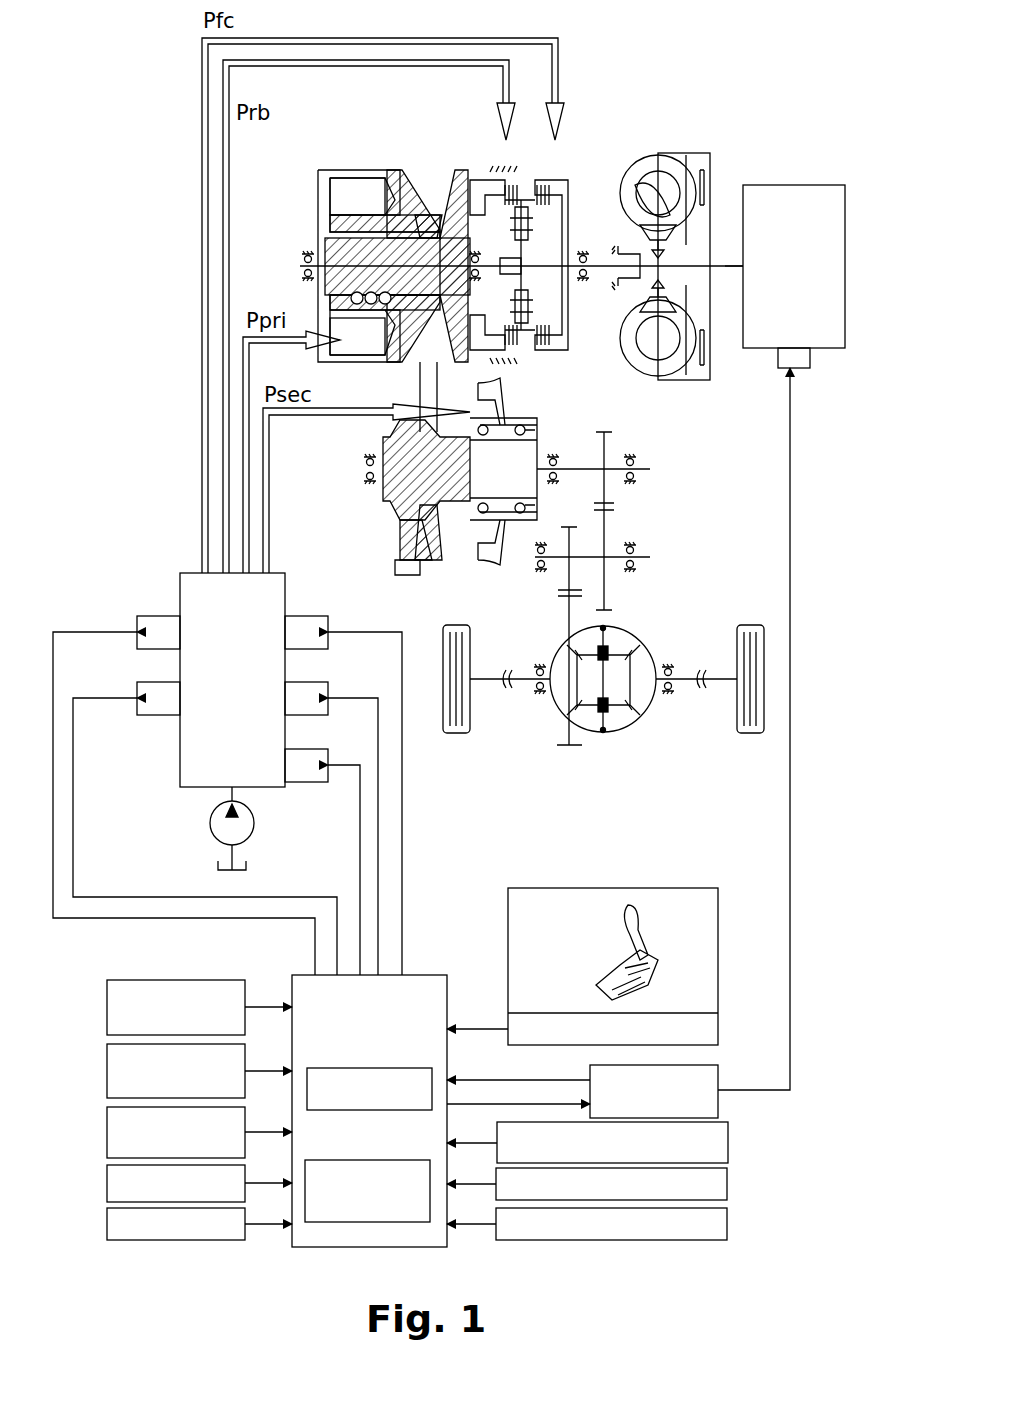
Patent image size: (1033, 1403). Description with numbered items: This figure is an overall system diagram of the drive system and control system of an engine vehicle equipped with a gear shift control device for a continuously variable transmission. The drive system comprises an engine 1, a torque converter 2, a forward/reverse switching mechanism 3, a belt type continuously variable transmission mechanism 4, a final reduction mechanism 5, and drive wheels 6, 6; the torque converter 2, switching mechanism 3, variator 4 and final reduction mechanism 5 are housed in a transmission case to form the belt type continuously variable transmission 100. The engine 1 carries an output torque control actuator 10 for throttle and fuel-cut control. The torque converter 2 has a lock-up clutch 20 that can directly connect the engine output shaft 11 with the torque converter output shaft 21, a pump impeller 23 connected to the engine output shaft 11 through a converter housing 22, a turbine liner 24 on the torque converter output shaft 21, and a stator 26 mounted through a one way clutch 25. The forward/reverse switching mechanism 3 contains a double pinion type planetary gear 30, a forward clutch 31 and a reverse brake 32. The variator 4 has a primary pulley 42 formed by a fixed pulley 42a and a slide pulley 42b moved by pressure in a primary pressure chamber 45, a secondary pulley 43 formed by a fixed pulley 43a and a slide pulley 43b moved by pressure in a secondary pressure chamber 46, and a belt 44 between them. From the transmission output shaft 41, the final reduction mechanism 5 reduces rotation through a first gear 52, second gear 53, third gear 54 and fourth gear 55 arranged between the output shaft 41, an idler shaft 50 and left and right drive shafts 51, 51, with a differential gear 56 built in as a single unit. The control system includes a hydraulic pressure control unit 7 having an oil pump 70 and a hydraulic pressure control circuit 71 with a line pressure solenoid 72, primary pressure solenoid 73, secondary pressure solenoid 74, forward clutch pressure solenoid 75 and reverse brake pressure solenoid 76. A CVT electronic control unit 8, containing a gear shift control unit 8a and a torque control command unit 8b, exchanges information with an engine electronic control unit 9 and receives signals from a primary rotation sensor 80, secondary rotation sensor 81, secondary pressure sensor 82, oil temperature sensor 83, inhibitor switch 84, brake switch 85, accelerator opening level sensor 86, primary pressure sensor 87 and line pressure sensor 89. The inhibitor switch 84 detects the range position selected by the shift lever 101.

The engine 1 is at (796, 185).
The torque converter 2 is at (653, 252).
The forward/reverse switching mechanism 3 is at (519, 253).
The belt type continuously variable transmission mechanism 4 is at (418, 233).
The final reduction mechanism 5 is at (662, 548).
The drive wheels 6 is at (456, 733).
The hydraulic pressure control unit 7 is at (180, 556).
The CVT electronic control unit 8 is at (371, 1087).
The gear shift control unit 8a is at (390, 1068).
The torque control command unit 8b is at (390, 1160).
The engine electronic control unit 9 is at (718, 1078).
The output torque control actuator 10 is at (810, 366).
The engine output shaft 11 is at (722, 268).
The lock-up clutch 20 is at (710, 215).
The torque converter output shaft 21 is at (610, 275).
The converter housing 22 is at (698, 153).
The pump impeller 23 is at (640, 170).
The turbine liner 24 is at (672, 375).
The one way clutch 25 is at (633, 237).
The stator 26 is at (637, 180).
The double pinion type planetary gear 30 is at (522, 348).
The forward clutch 31 is at (553, 180).
The reverse brake 32 is at (492, 180).
The transmission output shaft 41 is at (576, 462).
The primary pulley 42 is at (318, 192).
The fixed pulley 42a is at (455, 195).
The slide pulley 42b is at (412, 215).
The secondary pulley 43 is at (426, 497).
The fixed pulley 43a is at (400, 545).
The slide pulley 43b is at (440, 568).
The belt 44 is at (420, 390).
The primary pressure chamber 45 is at (345, 180).
The secondary pressure chamber 46 is at (480, 560).
The idler shaft 50 is at (614, 572).
The drive shafts 51 is at (500, 684).
The first gear 52 is at (612, 440).
The second gear 53 is at (610, 528).
The third gear 54 is at (562, 540).
The fourth gear 55 is at (568, 626).
The differential gear 56 is at (648, 645).
The oil pump 70 is at (210, 823).
The hydraulic pressure control circuit 71 is at (180, 780).
The line pressure solenoid 72 is at (306, 782).
The primary pressure solenoid 73 is at (312, 715).
The secondary pressure solenoid 74 is at (312, 649).
The forward clutch pressure solenoid 75 is at (158, 715).
The reverse brake pressure solenoid 76 is at (158, 616).
The primary rotation sensor 80 is at (107, 1007).
The secondary rotation sensor 81 is at (107, 1071).
The secondary pressure sensor 82 is at (107, 1132).
The oil temperature sensor 83 is at (107, 1183).
The inhibitor switch 84 is at (612, 966).
The brake switch 85 is at (107, 1224).
The accelerator opening level sensor 86 is at (728, 1142).
The primary pressure sensor 87 is at (727, 1183).
The line pressure sensor 89 is at (727, 1223).
The belt type continuously variable transmission 100 is at (700, 443).
The shift lever 101 is at (618, 908).